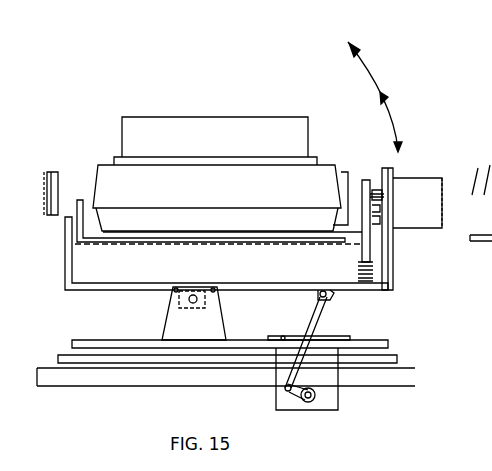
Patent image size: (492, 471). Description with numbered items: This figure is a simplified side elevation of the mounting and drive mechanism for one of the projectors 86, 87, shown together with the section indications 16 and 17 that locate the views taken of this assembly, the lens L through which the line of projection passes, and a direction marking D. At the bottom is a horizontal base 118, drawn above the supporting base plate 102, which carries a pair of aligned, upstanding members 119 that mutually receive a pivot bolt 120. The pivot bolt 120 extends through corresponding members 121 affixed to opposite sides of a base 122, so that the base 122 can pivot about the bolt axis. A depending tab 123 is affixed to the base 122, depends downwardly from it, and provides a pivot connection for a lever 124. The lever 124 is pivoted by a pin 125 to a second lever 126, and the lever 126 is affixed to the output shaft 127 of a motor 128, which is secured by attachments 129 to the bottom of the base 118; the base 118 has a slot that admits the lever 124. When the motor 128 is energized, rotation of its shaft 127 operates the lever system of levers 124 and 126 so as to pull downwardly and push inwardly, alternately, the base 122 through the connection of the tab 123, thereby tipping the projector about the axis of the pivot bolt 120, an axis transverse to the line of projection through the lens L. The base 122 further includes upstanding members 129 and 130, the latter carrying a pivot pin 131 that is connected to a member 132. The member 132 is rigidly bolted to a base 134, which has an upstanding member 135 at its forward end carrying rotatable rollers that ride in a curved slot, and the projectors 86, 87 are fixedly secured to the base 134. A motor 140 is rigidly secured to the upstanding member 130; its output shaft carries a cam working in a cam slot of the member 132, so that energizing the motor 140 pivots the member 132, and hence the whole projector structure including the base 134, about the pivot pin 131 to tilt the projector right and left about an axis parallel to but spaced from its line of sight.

The section line 16- 16 is at (45, 192).
The section line 17- 17 is at (48, 162).
The lens L is at (50, 172).
The direction D is at (337, 243).
The projector 86 is at (220, 153).
The projector 87 is at (228, 125).
The base plate 102 is at (385, 342).
The horizontal base 118 is at (142, 328).
The upstanding members 119 is at (218, 325).
The pivot bolt 120 is at (198, 293).
The members 121 is at (230, 289).
The base 122 is at (338, 280).
The depending tab 123 is at (330, 297).
The lever 124 is at (315, 308).
The pin 125 is at (283, 389).
The lever 126 is at (297, 402).
The output shaft 127 is at (318, 400).
The motor 128 is at (397, 412).
The attachments 129 is at (72, 272).
The upstanding member 130 is at (388, 254).
The pivot pin 131 is at (375, 192).
The member 132 is at (368, 250).
The base 134 is at (203, 239).
The upstanding member 135 is at (82, 229).
The motor 140 is at (436, 176).